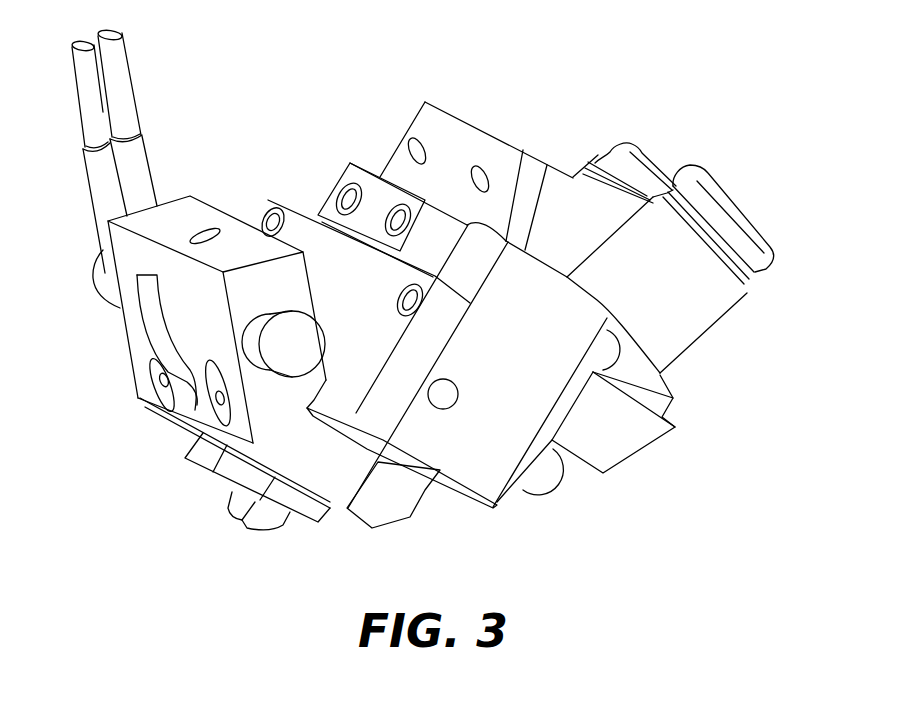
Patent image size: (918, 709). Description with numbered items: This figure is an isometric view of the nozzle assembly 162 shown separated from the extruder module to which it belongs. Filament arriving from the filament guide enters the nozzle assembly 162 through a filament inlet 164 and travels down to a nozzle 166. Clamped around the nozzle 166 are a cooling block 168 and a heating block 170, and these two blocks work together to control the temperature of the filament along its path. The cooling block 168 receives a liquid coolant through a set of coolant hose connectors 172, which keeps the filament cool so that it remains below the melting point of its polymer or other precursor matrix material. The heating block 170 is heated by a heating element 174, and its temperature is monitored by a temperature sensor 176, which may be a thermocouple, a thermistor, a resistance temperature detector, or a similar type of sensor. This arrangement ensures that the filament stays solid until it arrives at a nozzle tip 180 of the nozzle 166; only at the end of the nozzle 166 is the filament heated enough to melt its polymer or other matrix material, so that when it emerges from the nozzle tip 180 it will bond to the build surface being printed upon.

The nozzle assembly 162 is at (643, 70).
The filament inlet 164 is at (467, 142).
The nozzle 166 is at (278, 500).
The cooling block 168 is at (607, 438).
The heating block 170 is at (397, 500).
The coolant hose connectors 172 is at (747, 217).
The heating element 174 is at (107, 283).
The temperature sensor 176 is at (193, 410).
The nozzle tip 180 is at (253, 517).